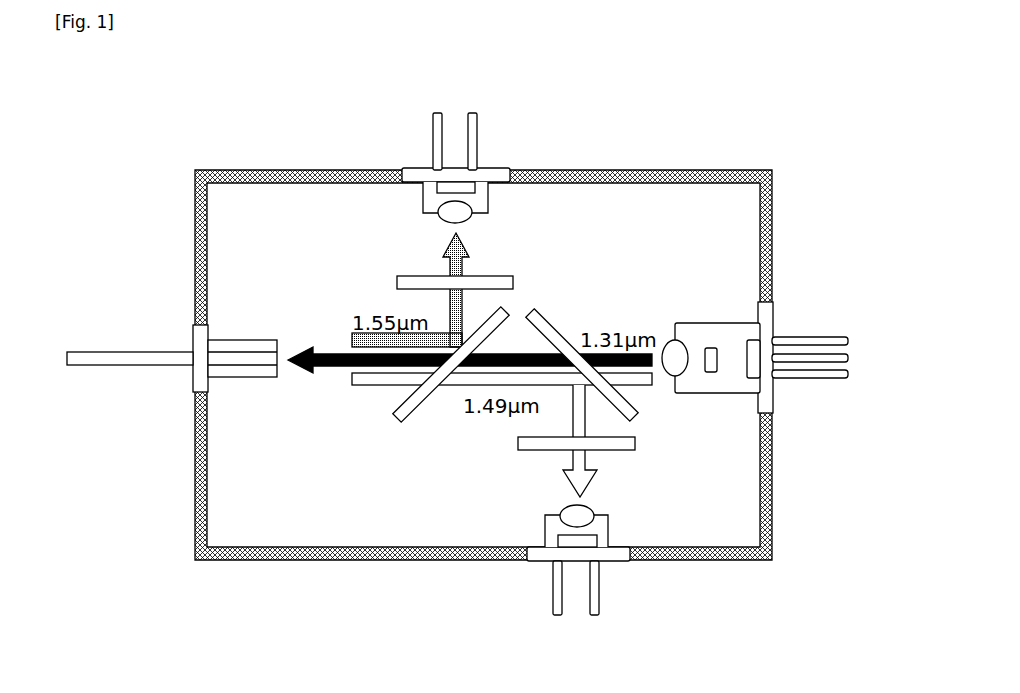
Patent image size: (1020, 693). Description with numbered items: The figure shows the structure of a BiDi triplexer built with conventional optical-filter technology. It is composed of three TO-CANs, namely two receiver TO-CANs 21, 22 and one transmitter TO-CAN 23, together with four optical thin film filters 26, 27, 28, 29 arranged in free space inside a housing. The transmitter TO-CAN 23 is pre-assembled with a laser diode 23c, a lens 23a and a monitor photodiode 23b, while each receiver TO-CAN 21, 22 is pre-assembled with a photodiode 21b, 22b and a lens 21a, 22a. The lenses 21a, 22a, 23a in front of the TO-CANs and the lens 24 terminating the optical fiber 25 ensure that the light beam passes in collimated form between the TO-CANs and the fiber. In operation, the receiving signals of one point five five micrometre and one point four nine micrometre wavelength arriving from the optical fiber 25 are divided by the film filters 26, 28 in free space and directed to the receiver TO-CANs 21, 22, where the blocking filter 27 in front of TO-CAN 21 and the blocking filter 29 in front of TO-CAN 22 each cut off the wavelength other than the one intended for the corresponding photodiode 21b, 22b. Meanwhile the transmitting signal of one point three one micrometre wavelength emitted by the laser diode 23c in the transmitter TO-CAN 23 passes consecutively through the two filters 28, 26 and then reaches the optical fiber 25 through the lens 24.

The receiver TO-CAN 21 is at (423, 134).
The lens 21a is at (423, 203).
The photodiode 21b is at (447, 187).
The receiver TO-CAN 22 is at (544, 598).
The lens 22a is at (550, 522).
The photodiode 22b is at (558, 543).
The transmitter TO-CAN 23 is at (785, 315).
The lens 23a is at (678, 342).
The monitor photodiode 23b is at (756, 340).
The laser diode 23c is at (712, 347).
The lens 24 is at (245, 370).
The optical fiber 25 is at (127, 350).
The optical thin film filter 26 is at (425, 403).
The blocking filter 27 is at (504, 273).
The optical thin film filter 28 is at (565, 323).
The blocking filter 29 is at (640, 444).